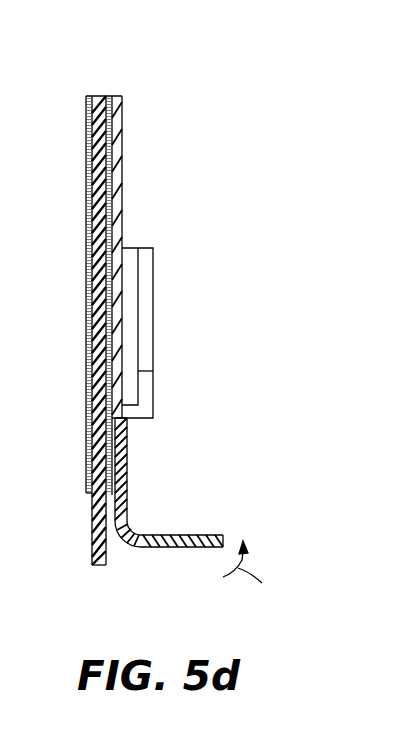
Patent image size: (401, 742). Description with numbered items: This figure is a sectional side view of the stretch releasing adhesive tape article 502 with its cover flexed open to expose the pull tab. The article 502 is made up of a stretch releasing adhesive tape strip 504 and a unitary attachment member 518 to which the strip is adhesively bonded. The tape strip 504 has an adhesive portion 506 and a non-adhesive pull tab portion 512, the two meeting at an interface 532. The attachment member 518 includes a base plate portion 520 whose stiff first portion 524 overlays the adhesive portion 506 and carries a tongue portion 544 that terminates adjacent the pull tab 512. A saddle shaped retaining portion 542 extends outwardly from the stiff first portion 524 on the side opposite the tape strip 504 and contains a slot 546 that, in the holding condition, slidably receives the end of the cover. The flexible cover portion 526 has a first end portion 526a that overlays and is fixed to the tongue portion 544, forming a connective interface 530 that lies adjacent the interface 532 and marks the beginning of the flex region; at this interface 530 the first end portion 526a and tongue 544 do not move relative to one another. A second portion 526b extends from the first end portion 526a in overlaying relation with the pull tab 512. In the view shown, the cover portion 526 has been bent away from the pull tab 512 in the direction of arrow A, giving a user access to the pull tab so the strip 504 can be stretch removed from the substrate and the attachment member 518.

The stretch releasing adhesive tape article 502 is at (160, 112).
The stretch releasing adhesive tape strip 504 is at (95, 89).
The adhesive portion 506 is at (90, 216).
The non-adhesive pull tab portion 512 is at (96, 545).
The unitary attachment member 518 is at (155, 250).
The base plate portion 520 is at (116, 156).
The stiff first portion 524 is at (112, 331).
The flexible cover portion 526 is at (143, 547).
The cover portion first end portion 526a is at (126, 424).
The cover portion second portion 526b is at (162, 535).
The connective interface 530 is at (127, 448).
The interface between adhesive portion and pull tab 532 is at (92, 493).
The saddle shaped retaining portion 542 is at (133, 295).
The tongue portion 544 is at (105, 472).
The slot 546 is at (130, 389).
The direction of movement A is at (251, 569).